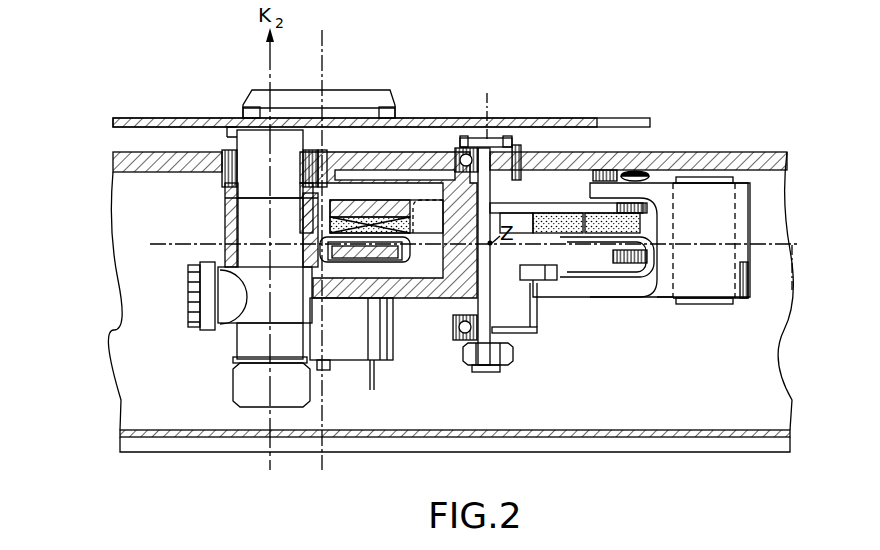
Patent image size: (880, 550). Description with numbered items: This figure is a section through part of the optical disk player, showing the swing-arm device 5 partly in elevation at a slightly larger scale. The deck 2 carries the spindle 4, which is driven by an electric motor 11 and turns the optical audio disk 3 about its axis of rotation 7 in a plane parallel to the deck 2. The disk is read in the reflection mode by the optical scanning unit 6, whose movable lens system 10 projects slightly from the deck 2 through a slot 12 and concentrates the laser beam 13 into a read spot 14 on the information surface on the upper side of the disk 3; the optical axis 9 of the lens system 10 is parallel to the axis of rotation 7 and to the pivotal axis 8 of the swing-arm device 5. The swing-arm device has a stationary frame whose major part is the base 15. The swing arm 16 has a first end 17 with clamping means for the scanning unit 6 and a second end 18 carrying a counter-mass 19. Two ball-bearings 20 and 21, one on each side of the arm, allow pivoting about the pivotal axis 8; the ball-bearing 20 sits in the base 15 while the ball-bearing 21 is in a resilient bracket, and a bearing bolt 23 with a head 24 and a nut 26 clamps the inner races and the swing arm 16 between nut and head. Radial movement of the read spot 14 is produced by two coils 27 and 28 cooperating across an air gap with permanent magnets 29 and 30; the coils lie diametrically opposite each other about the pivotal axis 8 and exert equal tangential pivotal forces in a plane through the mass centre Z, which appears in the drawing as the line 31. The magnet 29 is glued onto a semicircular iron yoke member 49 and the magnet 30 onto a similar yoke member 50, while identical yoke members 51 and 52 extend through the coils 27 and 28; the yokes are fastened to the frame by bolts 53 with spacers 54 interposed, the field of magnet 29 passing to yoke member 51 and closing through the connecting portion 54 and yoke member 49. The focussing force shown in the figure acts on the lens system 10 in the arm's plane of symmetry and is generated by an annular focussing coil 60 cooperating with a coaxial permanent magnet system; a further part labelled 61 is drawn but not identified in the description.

The deck 2 is at (700, 160).
The optical audio disk 3 is at (612, 118).
The spindle 4 is at (362, 100).
The swing-arm device 5 is at (599, 256).
The optical scanning unit 6 is at (233, 390).
The axis of rotation 7 is at (323, 55).
The pivotal axis 8 is at (498, 111).
The optical axis 9 is at (257, 338).
The movable lens system 10 is at (230, 192).
The electric motor 11 is at (387, 377).
The slot 12 is at (222, 158).
The laser beam 13 is at (258, 130).
The read spot 14 is at (275, 130).
The base 15 is at (590, 170).
The swing arm 16 is at (605, 297).
The first end 17 is at (226, 215).
The second end 18 is at (743, 215).
The counter-mass 19 is at (722, 304).
The ball-bearing 20 is at (463, 148).
The ball-bearing 21 is at (453, 333).
The bearing bolt 23 is at (483, 163).
The head 24 is at (500, 137).
The nut 26 is at (483, 355).
The coil 27 is at (340, 280).
The coil 28 is at (646, 266).
The permanent magnet 29 is at (610, 234).
The permanent magnet 30 is at (378, 262).
The line 31 is at (800, 278).
The iron yoke member 49 is at (580, 210).
The yoke member 50 is at (395, 205).
The iron yoke member 51 is at (652, 256).
The yoke member 52 is at (385, 265).
The bolt 53 is at (543, 282).
The spacer 54 is at (524, 218).
The annular focussing coil 60 is at (320, 170).
The bearing 61 is at (304, 160).